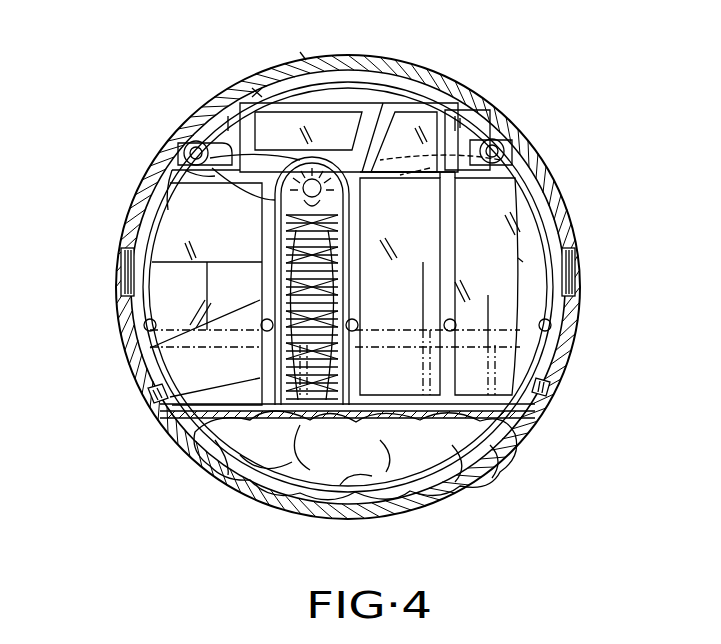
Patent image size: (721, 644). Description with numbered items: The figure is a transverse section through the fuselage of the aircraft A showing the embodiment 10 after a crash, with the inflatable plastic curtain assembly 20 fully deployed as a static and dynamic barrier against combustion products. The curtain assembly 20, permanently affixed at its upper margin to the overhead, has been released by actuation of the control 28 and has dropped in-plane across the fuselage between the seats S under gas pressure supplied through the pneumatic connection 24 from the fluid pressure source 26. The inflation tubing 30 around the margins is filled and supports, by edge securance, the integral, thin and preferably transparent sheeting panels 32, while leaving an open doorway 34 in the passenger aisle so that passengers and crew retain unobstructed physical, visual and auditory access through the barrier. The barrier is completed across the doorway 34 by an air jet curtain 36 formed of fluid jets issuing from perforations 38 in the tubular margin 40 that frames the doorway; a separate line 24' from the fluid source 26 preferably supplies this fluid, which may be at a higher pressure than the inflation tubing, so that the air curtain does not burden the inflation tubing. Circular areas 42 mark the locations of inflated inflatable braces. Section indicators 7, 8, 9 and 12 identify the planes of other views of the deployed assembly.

The embodiment 10 is at (117, 224).
The inflatable plastic curtain assembly 20 is at (257, 92).
The pneumatic connection 24 is at (311, 135).
The separate line 24' is at (355, 179).
The fluid pressure source 26 is at (196, 153).
The control 28 is at (205, 170).
The inflation tubing 30 is at (147, 238).
The sheeting panels 32 is at (153, 295).
The open doorway 34 is at (185, 336).
The air jet curtain 36 is at (190, 368).
The perforations 38 is at (160, 400).
The tubular margin 40 is at (215, 426).
The circular areas 42 is at (456, 320).
The section line 12- 12 is at (308, 82).
The section line 7- 7 is at (302, 20).
The section line 8- 8 is at (95, 288).
The section line 9- 9 is at (513, 209).
The aircraft A is at (303, 58).
The seats S is at (523, 258).